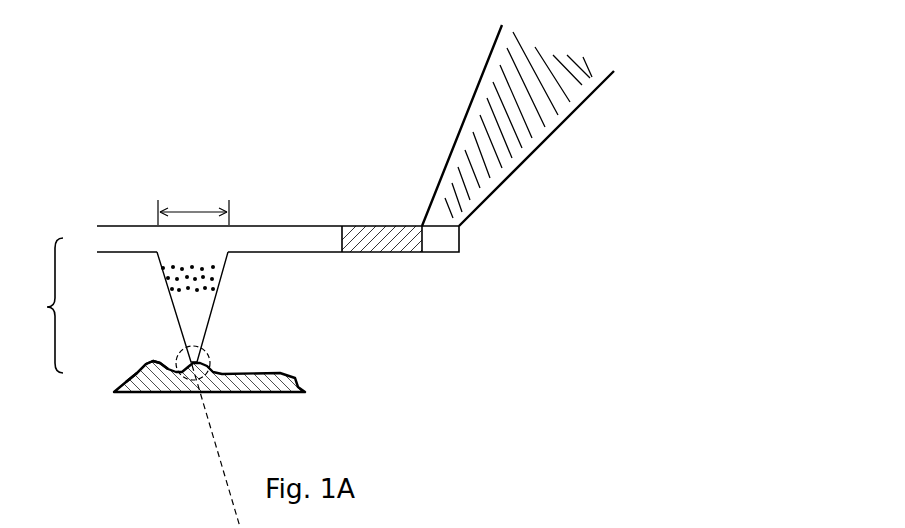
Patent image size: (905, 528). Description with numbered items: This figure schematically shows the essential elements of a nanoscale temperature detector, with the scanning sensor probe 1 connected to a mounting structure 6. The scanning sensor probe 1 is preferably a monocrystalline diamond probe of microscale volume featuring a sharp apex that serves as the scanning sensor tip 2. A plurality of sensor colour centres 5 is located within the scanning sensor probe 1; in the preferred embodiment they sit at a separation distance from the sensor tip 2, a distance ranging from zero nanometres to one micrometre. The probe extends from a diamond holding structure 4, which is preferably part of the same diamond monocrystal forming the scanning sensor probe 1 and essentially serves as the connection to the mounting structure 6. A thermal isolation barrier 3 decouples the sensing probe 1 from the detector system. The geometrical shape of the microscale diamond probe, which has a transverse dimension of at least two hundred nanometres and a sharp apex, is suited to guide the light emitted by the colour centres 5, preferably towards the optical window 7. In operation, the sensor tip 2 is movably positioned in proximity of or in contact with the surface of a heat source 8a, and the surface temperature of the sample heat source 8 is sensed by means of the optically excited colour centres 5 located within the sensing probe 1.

The scanning sensor probe 1 is at (42, 305).
The scanning sensor tip 2 is at (197, 363).
The thermal isolation barrier 3 is at (375, 237).
The diamond holding structure 4 is at (267, 237).
The sensor colour centres 5 is at (215, 288).
The mounting structure 6 is at (518, 132).
The optical window 7 is at (196, 210).
The sample heat source 8 is at (242, 383).
The surface of the heat source 8a is at (143, 363).